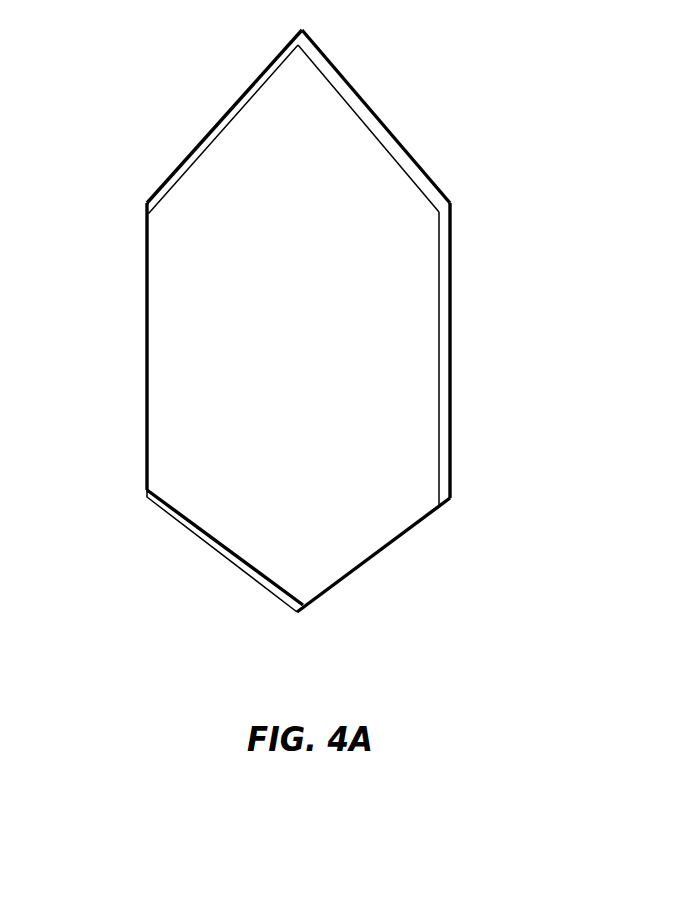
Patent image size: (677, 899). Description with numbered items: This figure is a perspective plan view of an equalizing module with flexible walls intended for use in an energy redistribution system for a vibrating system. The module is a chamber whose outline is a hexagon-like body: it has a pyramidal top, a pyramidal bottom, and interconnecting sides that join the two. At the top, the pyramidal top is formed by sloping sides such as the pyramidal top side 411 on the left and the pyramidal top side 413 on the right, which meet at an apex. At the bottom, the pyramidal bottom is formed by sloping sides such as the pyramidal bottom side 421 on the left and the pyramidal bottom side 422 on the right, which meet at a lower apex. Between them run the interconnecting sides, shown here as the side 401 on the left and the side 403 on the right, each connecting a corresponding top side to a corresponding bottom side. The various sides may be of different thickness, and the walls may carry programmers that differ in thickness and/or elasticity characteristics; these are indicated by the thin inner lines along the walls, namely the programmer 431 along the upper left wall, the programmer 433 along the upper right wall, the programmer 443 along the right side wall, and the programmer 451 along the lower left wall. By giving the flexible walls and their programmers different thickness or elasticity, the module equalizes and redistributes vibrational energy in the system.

The side 401 is at (147, 343).
The side 403 is at (450, 303).
The pyramidal top side 411 is at (195, 150).
The pyramidal top side 413 is at (407, 152).
The pyramidal bottom side 421 is at (217, 553).
The pyramidal bottom side 422 is at (365, 563).
The programmer 431 is at (254, 94).
The programmer 433 is at (354, 108).
The programmer 443 is at (440, 375).
The programmer 451 is at (171, 515).